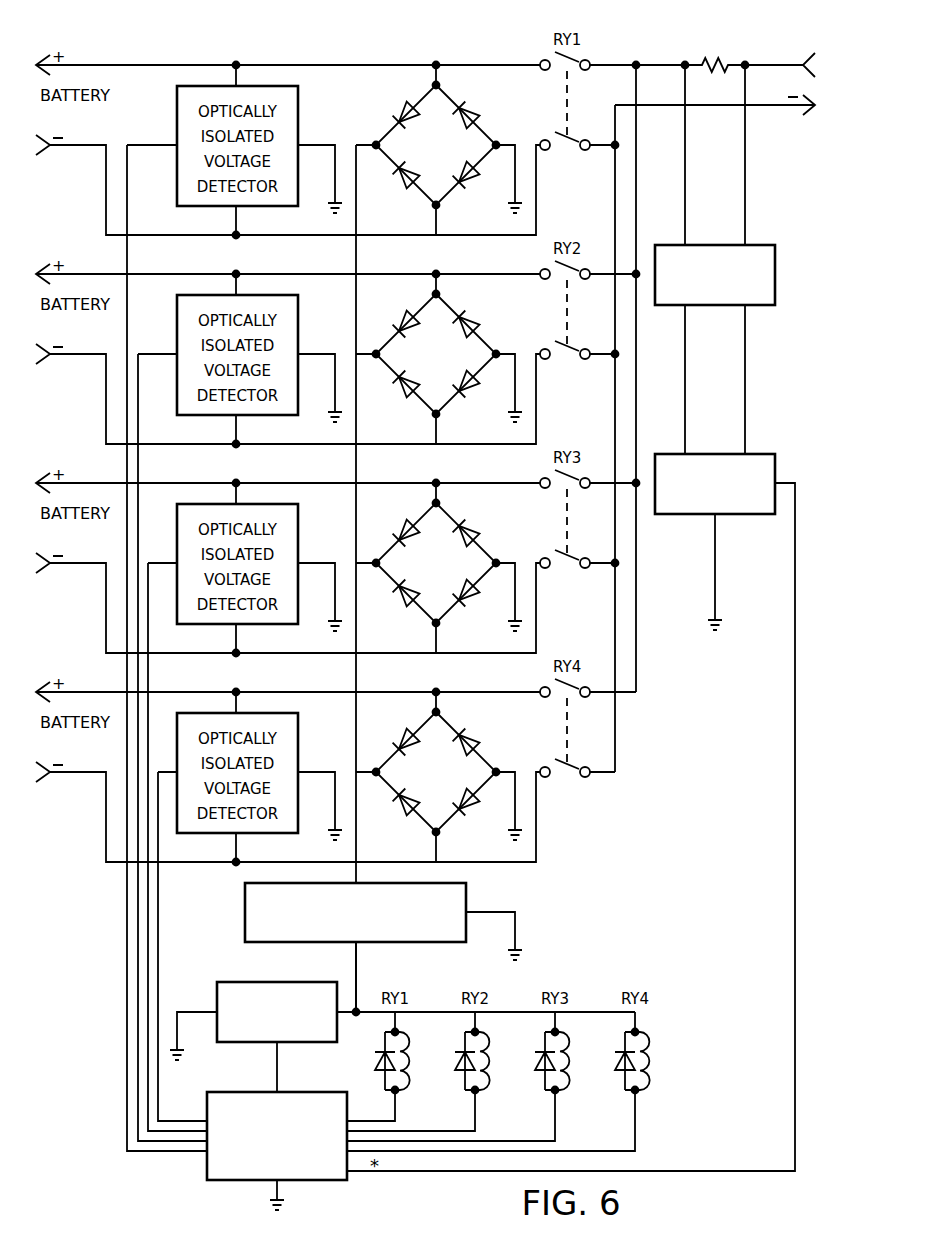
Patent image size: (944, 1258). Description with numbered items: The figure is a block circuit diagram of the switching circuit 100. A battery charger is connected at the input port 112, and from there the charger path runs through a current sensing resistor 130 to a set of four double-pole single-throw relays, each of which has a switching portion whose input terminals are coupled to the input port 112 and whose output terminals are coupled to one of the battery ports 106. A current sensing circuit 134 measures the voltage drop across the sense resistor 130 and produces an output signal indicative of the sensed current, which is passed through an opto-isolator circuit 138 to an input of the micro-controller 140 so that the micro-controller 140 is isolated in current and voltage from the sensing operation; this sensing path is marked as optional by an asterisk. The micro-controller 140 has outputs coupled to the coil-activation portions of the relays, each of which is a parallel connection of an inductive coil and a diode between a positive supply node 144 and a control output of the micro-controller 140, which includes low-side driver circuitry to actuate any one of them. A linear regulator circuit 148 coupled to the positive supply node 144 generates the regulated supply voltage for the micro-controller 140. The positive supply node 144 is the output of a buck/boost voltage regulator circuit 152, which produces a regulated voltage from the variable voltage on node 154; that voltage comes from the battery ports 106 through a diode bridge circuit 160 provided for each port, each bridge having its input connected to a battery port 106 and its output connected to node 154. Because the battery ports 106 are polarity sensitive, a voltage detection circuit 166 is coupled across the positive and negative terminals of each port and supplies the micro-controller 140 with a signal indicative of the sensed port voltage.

The circuit 100 is at (780, 1190).
The battery port 106 is at (67, 169).
The input port 112 is at (824, 117).
The current sensing resistor 130 is at (718, 60).
The current sensing circuit 134 is at (776, 262).
The opto-isolator circuit 138 is at (776, 470).
The micro-controller 140 is at (248, 1180).
The positive supply node 144 is at (356, 975).
The linear regulator circuit 148 is at (217, 1002).
The voltage regulator circuit 152 is at (467, 900).
The node 154 is at (355, 133).
The diode bridge circuit 160 is at (491, 94).
The voltage detection circuit 166 is at (217, 85).